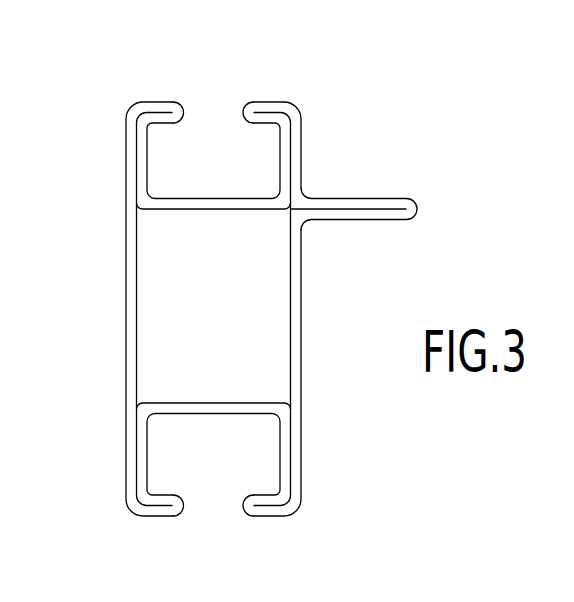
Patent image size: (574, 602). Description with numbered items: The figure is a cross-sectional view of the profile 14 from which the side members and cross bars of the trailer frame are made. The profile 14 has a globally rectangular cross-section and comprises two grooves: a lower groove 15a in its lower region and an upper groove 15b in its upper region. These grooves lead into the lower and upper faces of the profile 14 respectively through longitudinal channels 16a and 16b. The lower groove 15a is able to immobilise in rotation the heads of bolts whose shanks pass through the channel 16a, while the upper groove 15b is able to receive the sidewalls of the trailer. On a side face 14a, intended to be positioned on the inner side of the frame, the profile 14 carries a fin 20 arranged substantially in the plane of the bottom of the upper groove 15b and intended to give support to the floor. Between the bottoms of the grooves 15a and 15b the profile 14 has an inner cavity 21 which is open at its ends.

The profile 14 is at (323, 163).
The side face 14a is at (302, 312).
The lower groove 15a is at (184, 452).
The upper groove 15b is at (170, 168).
The lower longitudinal channel 16a is at (217, 503).
The upper longitudinal channel 16b is at (212, 118).
The fin 20 is at (373, 208).
The inner cavity 21 is at (177, 328).